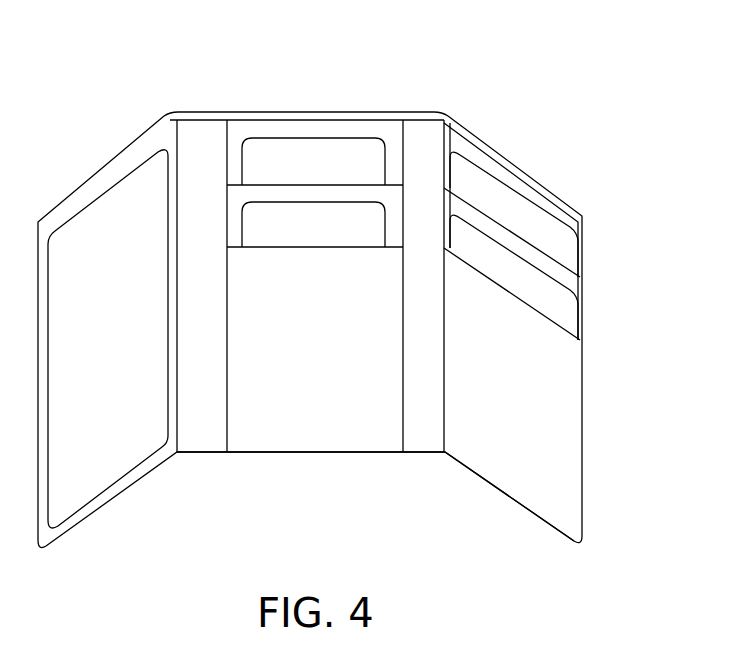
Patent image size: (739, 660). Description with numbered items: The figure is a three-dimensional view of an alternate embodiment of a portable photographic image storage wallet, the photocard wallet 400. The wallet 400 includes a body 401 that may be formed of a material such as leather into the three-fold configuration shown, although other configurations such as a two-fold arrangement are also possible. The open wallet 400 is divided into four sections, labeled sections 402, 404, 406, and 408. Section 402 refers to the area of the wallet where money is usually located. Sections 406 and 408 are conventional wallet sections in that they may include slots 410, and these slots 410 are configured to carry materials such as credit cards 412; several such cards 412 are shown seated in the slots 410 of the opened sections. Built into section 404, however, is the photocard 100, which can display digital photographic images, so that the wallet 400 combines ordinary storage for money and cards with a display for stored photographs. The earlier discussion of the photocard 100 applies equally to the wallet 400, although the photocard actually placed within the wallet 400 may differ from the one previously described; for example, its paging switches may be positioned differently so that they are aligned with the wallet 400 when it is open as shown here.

The photocard wallet 400 is at (513, 30).
The body 401 is at (562, 432).
The section 402 is at (197, 117).
The section 404 is at (115, 497).
The section 406 is at (316, 453).
The section 408 is at (508, 497).
The slots 410 is at (390, 186).
The credit cards 412 is at (255, 153).
The photocard 100 is at (129, 334).